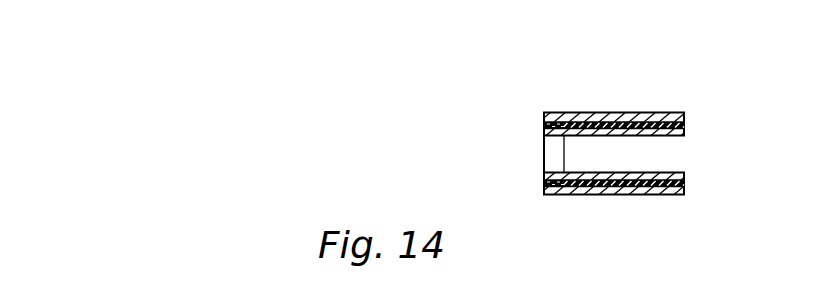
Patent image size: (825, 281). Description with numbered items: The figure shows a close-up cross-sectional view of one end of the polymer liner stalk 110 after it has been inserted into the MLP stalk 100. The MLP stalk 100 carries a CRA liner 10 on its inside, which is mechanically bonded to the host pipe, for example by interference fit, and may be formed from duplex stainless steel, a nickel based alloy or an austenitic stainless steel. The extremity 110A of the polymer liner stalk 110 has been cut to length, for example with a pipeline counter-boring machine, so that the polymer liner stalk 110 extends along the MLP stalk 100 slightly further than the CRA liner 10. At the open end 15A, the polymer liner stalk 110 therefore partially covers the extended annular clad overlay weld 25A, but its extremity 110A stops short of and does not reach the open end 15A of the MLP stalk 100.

The MLP stalk 100 is at (596, 156).
The CRA liner 10 is at (684, 124).
The polymer liner stalk 110 is at (653, 152).
The extremity of the polymer liner stalk 110A is at (563, 163).
The open end 15A is at (488, 138).
The extended annular clad overlay weld 25A is at (552, 114).